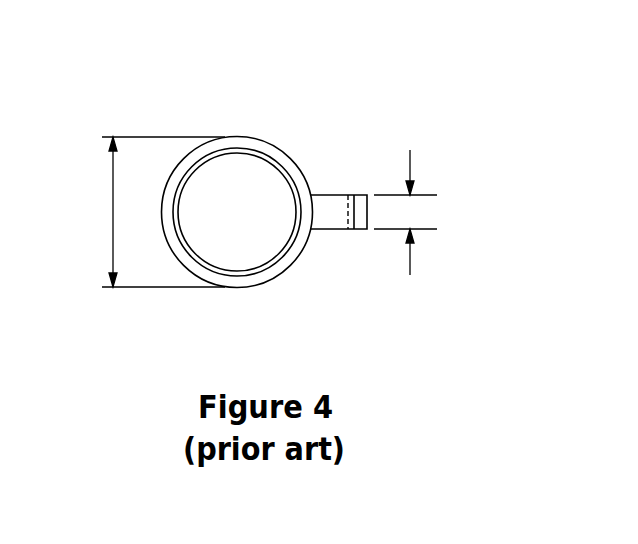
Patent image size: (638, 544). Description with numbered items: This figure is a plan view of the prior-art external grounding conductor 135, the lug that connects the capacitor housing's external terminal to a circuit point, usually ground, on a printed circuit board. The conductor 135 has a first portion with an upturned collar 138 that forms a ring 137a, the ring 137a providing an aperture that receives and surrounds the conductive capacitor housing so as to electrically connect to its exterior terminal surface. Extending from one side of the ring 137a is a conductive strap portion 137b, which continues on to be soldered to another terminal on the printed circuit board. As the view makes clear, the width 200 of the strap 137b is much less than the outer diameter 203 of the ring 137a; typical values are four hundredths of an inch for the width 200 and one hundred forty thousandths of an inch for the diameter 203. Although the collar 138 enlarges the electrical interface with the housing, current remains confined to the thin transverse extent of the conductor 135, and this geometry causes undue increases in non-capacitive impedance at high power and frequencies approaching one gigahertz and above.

The external conductor 135 is at (178, 97).
The ring 137a is at (238, 137).
The conductive strap portion 137b is at (335, 210).
The upturned collar 138 is at (235, 270).
The outer diameter of the ring 203 is at (157, 212).
The width of the conductor strap 200 is at (405, 225).